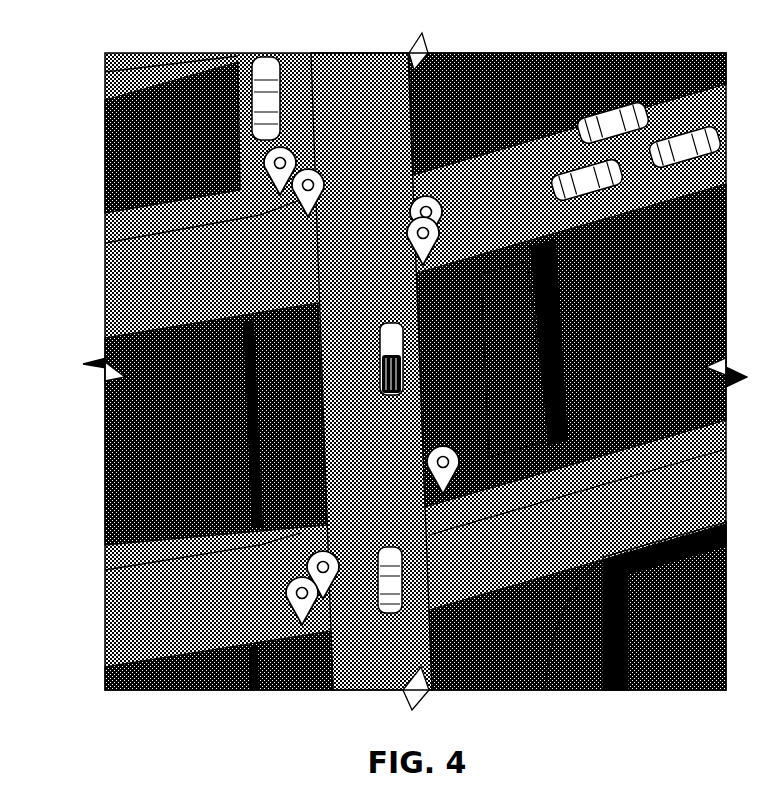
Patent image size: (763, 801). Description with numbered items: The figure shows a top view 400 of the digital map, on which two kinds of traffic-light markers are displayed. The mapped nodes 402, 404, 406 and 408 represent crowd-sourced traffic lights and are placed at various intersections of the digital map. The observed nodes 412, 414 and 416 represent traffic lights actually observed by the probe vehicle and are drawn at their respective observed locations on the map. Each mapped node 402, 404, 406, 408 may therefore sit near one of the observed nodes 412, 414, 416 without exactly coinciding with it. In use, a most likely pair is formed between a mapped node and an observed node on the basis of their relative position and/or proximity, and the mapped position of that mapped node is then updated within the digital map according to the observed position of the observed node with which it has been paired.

The top view 400 is at (100, 48).
The mapped node 402 is at (352, 371).
The mapped node 404 is at (308, 168).
The mapped node 406 is at (483, 268).
The mapped node 408 is at (462, 446).
The observed node 412 is at (302, 622).
The observed node 414 is at (169, 132).
The observed node 416 is at (428, 197).